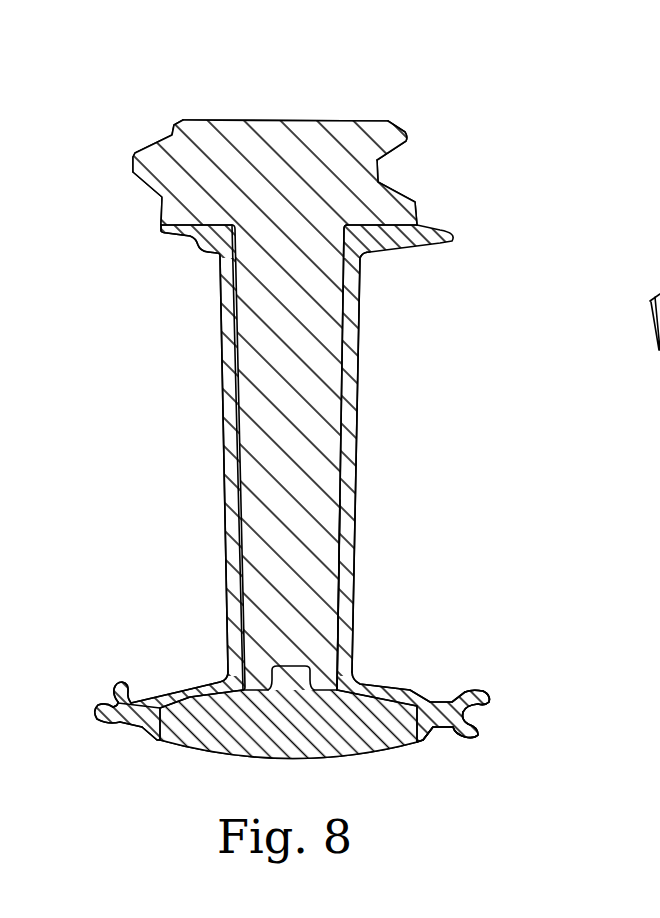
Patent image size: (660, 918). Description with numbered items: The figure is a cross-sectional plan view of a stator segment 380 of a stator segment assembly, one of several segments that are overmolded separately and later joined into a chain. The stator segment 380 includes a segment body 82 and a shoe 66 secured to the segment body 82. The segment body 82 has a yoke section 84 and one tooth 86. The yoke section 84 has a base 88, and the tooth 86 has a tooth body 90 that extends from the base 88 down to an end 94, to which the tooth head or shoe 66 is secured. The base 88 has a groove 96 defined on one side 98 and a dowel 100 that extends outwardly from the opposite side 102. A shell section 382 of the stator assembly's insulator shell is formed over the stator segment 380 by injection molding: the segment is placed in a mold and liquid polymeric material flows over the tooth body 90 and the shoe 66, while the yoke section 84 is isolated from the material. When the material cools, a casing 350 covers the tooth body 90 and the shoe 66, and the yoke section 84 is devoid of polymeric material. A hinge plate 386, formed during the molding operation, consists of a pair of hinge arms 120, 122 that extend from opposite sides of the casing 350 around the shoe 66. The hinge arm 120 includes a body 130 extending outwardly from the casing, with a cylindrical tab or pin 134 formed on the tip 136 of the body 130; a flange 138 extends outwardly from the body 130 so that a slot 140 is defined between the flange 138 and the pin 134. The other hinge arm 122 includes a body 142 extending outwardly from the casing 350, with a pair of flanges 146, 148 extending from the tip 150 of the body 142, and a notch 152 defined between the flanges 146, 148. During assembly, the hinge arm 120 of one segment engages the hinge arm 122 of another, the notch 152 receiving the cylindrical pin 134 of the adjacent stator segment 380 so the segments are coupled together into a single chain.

The stator segment 380 is at (523, 100).
The shell section 382 is at (410, 524).
The hinge plate 386 is at (543, 678).
The casing 350 is at (358, 428).
The segment body 82 is at (330, 370).
The yoke section 84 is at (335, 126).
The tooth 86 is at (330, 481).
The base 88 is at (228, 133).
The tooth body 90 is at (330, 298).
The end 94 is at (320, 677).
The groove 96 is at (415, 166).
The side 98 is at (403, 123).
The dowel 100 is at (154, 144).
The opposite side 102 is at (160, 212).
The shoe 66 is at (371, 752).
The hinge arm 120 is at (128, 612).
The hinge arm 122 is at (512, 620).
The body 130 is at (151, 742).
The cylindrical pin 134 is at (97, 710).
The tip 136 is at (113, 727).
The flange 138 is at (122, 686).
The slot 140 is at (103, 690).
The body 142 is at (447, 731).
The flange 146 is at (481, 690).
The flange 148 is at (474, 738).
The tip 150 is at (438, 691).
The notch 152 is at (505, 718).